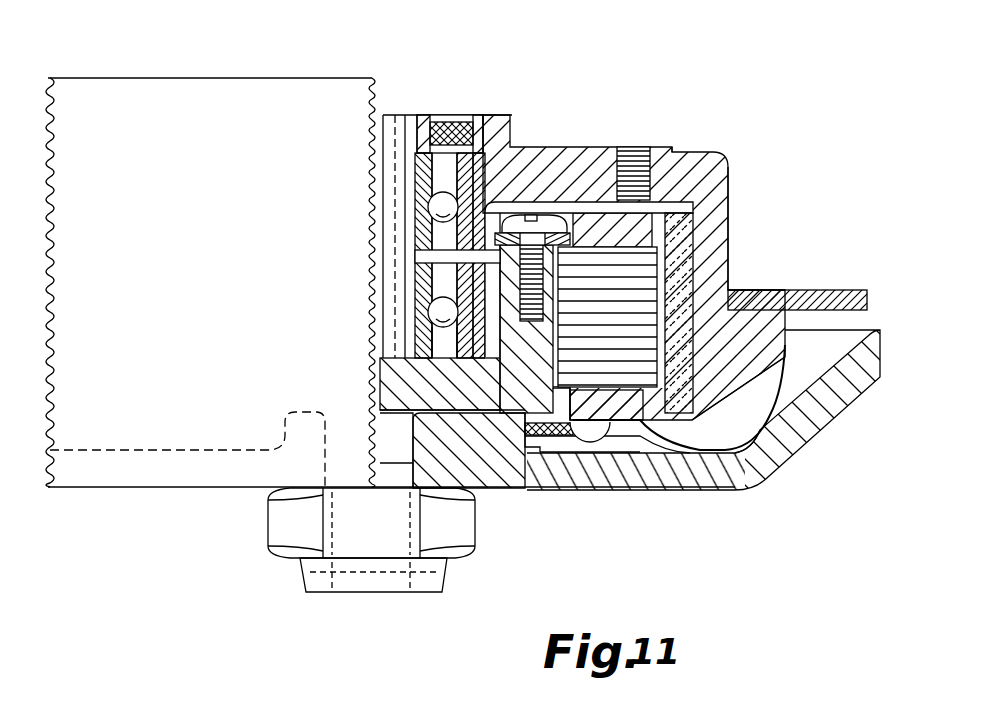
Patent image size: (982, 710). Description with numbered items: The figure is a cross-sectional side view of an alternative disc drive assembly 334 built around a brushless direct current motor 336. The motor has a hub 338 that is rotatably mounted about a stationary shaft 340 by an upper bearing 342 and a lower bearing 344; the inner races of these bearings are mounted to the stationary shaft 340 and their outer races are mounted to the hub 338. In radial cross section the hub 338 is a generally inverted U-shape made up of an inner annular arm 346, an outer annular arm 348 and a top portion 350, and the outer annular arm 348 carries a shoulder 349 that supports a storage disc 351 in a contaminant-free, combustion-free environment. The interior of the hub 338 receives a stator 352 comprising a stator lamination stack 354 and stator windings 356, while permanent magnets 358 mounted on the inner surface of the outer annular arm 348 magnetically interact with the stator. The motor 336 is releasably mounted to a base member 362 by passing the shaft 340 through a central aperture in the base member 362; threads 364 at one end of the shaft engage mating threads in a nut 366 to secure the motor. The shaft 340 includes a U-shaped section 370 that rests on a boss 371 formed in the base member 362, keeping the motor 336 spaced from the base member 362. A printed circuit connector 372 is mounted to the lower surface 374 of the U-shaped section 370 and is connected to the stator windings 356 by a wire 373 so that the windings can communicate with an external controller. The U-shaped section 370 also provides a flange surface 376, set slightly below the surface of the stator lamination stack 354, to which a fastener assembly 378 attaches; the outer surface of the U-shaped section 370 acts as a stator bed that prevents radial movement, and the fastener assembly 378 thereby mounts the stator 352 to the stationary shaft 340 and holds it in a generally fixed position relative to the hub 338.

The disc drive assembly 334 is at (600, 80).
The brushless direct current motor 336 is at (705, 140).
The hub 338 is at (733, 220).
The stationary shaft 340 is at (400, 122).
The upper bearing 342 is at (413, 192).
The lower bearing 344 is at (413, 336).
The inner annular arm 346 is at (415, 262).
The outer annular arm 348 is at (728, 170).
The shoulder 349 is at (763, 292).
The top portion 350 is at (670, 145).
The storage disc 351 is at (820, 290).
The stator 352 is at (593, 218).
The stator lamination stack 354 is at (643, 362).
The stator windings 356 is at (690, 452).
The permanent magnets 358 is at (668, 267).
The base member 362 is at (738, 477).
The threads 364 is at (448, 556).
The nut 366 is at (275, 522).
The U-shaped section 370 is at (385, 372).
The boss 371 is at (540, 448).
The printed circuit connector 372 is at (560, 448).
The wire 373 is at (600, 440).
The lower surface 374 is at (542, 435).
The flange surface 376 is at (497, 243).
The fastener assembly 378 is at (546, 212).